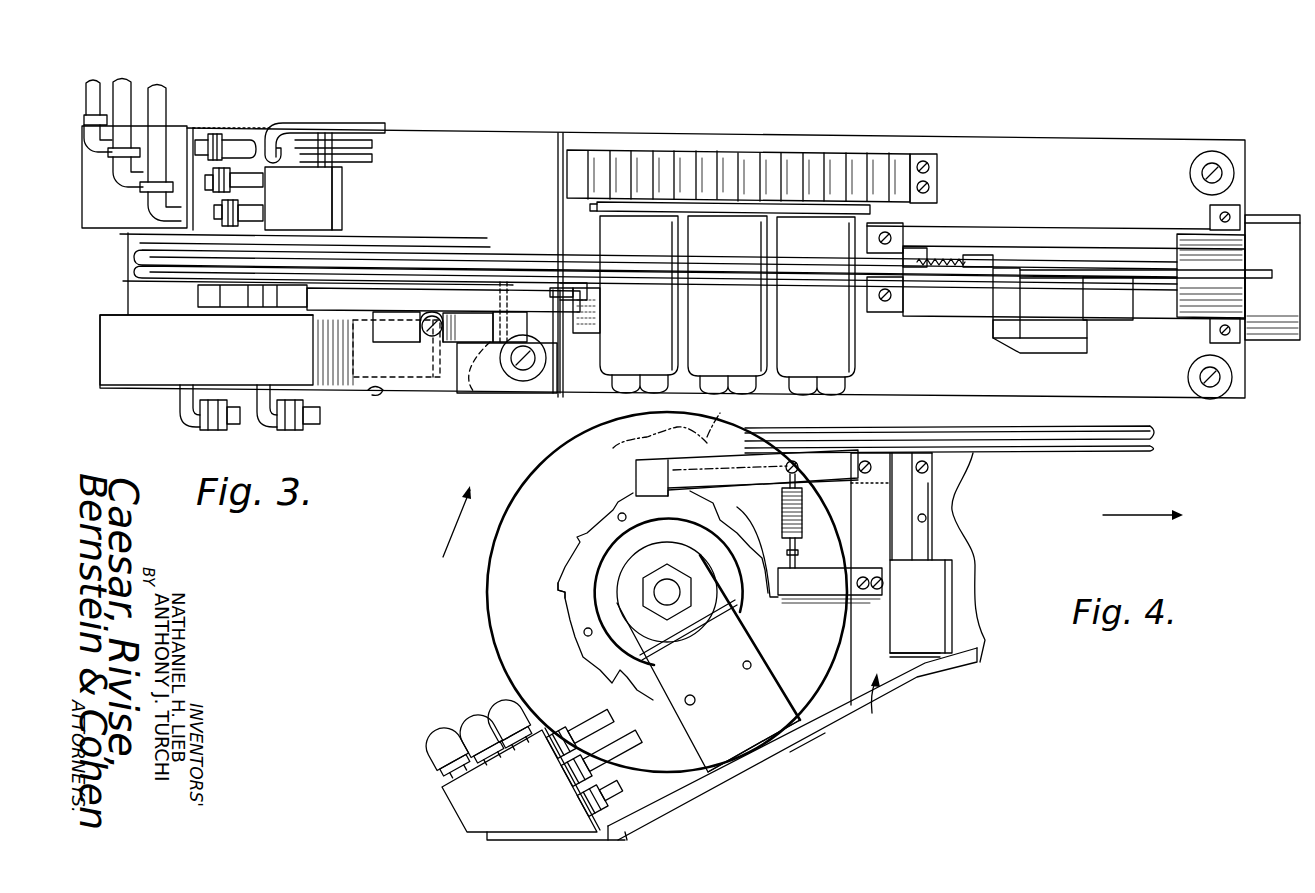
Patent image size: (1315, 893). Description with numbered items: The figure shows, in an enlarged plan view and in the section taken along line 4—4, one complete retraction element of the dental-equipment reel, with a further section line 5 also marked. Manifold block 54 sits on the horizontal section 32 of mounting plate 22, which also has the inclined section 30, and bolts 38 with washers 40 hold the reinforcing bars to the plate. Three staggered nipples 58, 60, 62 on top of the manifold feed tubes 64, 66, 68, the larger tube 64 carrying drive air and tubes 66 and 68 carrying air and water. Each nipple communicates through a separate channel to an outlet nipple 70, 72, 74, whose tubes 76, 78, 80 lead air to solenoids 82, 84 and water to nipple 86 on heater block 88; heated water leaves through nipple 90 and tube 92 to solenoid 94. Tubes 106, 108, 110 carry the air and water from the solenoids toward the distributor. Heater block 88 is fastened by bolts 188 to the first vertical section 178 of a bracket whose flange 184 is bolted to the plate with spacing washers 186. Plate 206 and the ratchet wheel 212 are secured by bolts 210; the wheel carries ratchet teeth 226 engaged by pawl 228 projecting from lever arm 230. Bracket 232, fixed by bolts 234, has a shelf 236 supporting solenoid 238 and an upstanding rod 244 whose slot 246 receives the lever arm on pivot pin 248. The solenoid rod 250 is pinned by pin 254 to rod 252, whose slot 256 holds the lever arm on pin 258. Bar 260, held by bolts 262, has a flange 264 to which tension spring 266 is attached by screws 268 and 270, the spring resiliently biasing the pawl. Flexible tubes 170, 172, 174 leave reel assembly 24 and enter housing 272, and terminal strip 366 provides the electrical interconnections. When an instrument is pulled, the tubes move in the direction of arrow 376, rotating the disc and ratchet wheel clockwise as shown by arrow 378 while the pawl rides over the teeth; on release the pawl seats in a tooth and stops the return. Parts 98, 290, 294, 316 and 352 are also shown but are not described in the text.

In FIG. 3, the section line 4— 4 is at (107, 310).
In FIG. 3, the section line 5- 5 is at (567, 432).
In FIG. 4, the section line 5- 5 is at (770, 777).
In FIG. 3, the mounting plate 22 is at (1017, 132).
In FIG. 4, the mounting plate 22 is at (843, 724).
In FIG. 3, the reel assembly 24 is at (368, 228).
In FIG. 4, the second inclined section 30 is at (712, 786).
In FIG. 4, the horizontal section 32 is at (637, 845).
In FIG. 3, the bolts 38 is at (511, 362).
In FIG. 3, the washers 40 is at (548, 374).
In FIG. 3, the manifold block 54 is at (110, 224).
In FIG. 4, the manifold block 54 is at (443, 800).
In FIG. 3, the nipple 58 is at (96, 158).
In FIG. 4, the nipple 58 is at (444, 736).
In FIG. 3, the nipple 60 is at (133, 187).
In FIG. 4, the nipple 60 is at (473, 724).
In FIG. 3, the nipple 62 is at (150, 215).
In FIG. 4, the nipple 62 is at (504, 710).
In FIG. 3, the tube 64 is at (91, 80).
In FIG. 3, the tube 66 is at (128, 82).
In FIG. 3, the tube 68 is at (166, 92).
In FIG. 3, the nipple 70 is at (212, 132).
In FIG. 3, the nipple 72 is at (218, 180).
In FIG. 3, the nipple 74 is at (220, 212).
In FIG. 4, the nipple 74 is at (602, 808).
In FIG. 3, the air tube 76 is at (244, 140).
In FIG. 3, the air tube 78 is at (263, 183).
In FIG. 3, the water tube 80 is at (263, 217).
In FIG. 4, the water tube 80 is at (638, 782).
In FIG. 3, the solenoid 82 is at (657, 241).
In FIG. 3, the solenoid 84 is at (744, 241).
In FIG. 3, the nipple 86 is at (197, 416).
In FIG. 3, the heater block 88 is at (223, 358).
In FIG. 3, the nipple 90 is at (262, 392).
In FIG. 3, the tube 92 is at (320, 418).
In FIG. 3, the solenoid 94 is at (824, 241).
In FIG. 3, the bar 98 is at (597, 207).
In FIG. 3, the tube 106 is at (333, 124).
In FIG. 3, the tube 108 is at (373, 145).
In FIG. 3, the tube 110 is at (366, 161).
In FIG. 3, the flexible tube 170 is at (823, 259).
In FIG. 3, the flexible tube 172 is at (817, 284).
In FIG. 4, the flexible tube 172 is at (1150, 430).
In FIG. 4, the flexible tube 174 is at (1152, 447).
In FIG. 4, the first vertical section 178 is at (717, 670).
In FIG. 3, the flange 184 is at (420, 382).
In FIG. 4, the flange 184 is at (735, 750).
In FIG. 4, the washers 186 is at (810, 748).
In FIG. 3, the bolts 188 is at (376, 394).
In FIG. 4, the bolts 188 is at (696, 700).
In FIG. 4, the plate 206 is at (547, 570).
In FIG. 4, the bolts 210 is at (626, 515).
In FIG. 4, the ratchet wheel 212 is at (556, 621).
In FIG. 4, the ratchet teeth 226 is at (595, 532).
In FIG. 4, the pawl 228 is at (638, 492).
In FIG. 3, the lever arm 230 is at (393, 295).
In FIG. 4, the lever arm 230 is at (687, 460).
In FIG. 4, the bracket 232 is at (893, 692).
In FIG. 4, the bolts 234 is at (915, 689).
In FIG. 4, the horizontal shelf 236 is at (953, 657).
In FIG. 4, the solenoid 238 is at (937, 583).
In FIG. 3, the upstanding rod 244 is at (576, 341).
In FIG. 4, the upstanding rod 244 is at (887, 523).
In FIG. 3, the slot 246 is at (503, 262).
In FIG. 3, the pivot pin 248 is at (494, 382).
In FIG. 4, the pivot pin 248 is at (866, 460).
In FIG. 4, the rod 250 is at (935, 545).
In FIG. 4, the rod 252 is at (937, 500).
In FIG. 4, the pin 254 is at (928, 520).
In FIG. 3, the slot 256 is at (588, 290).
In FIG. 3, the pin 258 is at (562, 286).
In FIG. 4, the pin 258 is at (924, 460).
In FIG. 4, the bar 260 is at (815, 572).
In FIG. 4, the bolts 262 is at (877, 576).
In FIG. 3, the flange 264 is at (447, 330).
In FIG. 4, the tension spring 266 is at (803, 508).
In FIG. 4, the screw 268 is at (798, 467).
In FIG. 4, the screw 270 is at (776, 566).
In FIG. 3, the housing 272 is at (1054, 224).
In FIG. 3, the clamp block 290 is at (960, 252).
In FIG. 3, the block 294 is at (1175, 247).
In FIG. 3, the block 316 is at (1060, 273).
In FIG. 3, the bracket 352 is at (1063, 340).
In FIG. 3, the terminal strip 366 is at (848, 160).
In FIG. 4, the arrow 376 is at (1130, 517).
In FIG. 4, the arrow 378 is at (440, 521).